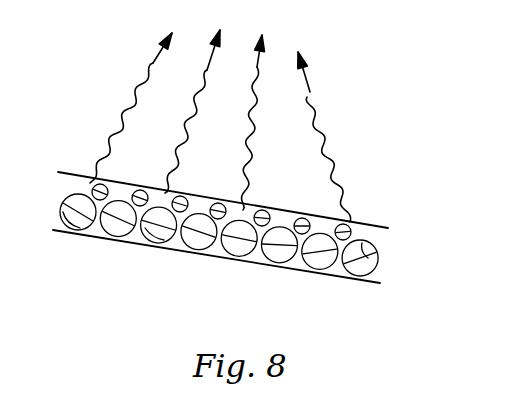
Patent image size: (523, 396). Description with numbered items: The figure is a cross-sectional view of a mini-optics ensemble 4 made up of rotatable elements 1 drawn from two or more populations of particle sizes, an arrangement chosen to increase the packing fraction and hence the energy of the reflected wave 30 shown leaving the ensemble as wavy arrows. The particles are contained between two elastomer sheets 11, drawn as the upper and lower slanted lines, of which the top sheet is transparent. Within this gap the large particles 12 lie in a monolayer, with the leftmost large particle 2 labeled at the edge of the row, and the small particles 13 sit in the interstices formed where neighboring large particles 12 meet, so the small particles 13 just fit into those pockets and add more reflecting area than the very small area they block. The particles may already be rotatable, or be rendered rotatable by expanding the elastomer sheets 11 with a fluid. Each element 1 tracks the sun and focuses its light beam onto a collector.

The rotatable element 1 is at (229, 236).
The particles (large) 2 is at (62, 217).
The mini-optics ensemble 4 is at (229, 234).
The elastomer sheets 11 is at (338, 280).
The large particles 12 is at (378, 267).
The small particles 13 is at (218, 203).
The reflected wave 30 is at (140, 92).